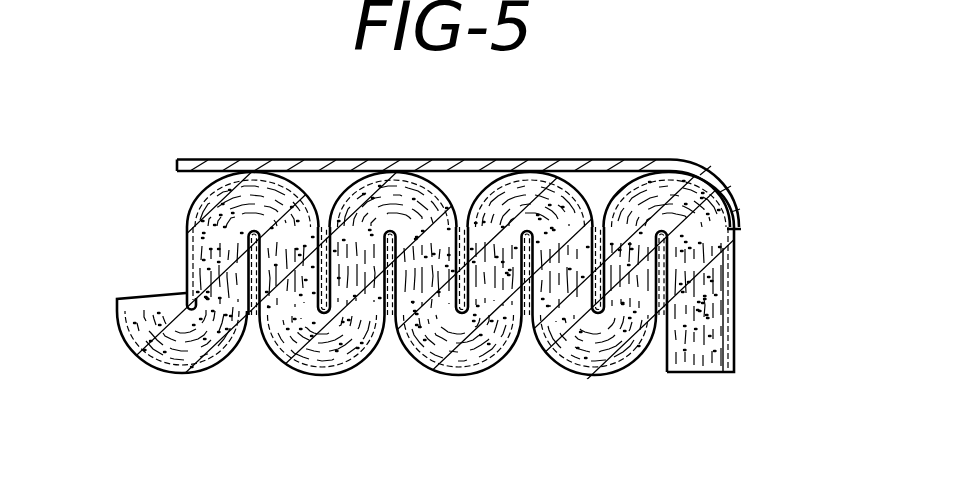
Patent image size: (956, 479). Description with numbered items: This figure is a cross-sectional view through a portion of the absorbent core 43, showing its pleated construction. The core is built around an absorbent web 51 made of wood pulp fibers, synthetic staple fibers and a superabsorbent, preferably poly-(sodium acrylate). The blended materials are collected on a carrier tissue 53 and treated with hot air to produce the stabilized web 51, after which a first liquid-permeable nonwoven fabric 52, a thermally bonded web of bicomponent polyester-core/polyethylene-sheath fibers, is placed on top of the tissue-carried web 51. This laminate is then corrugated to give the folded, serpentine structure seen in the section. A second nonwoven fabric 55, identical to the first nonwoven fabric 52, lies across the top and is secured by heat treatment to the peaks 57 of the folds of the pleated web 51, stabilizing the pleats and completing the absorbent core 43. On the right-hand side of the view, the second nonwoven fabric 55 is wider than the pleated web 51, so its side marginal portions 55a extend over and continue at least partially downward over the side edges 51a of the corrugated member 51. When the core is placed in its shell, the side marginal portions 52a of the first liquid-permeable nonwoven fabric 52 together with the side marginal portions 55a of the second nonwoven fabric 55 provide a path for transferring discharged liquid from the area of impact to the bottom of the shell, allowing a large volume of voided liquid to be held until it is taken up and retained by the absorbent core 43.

The absorbent core 43 is at (795, 266).
The absorbent web 51 is at (186, 312).
The side edges of corrugated member 51a is at (735, 250).
The first liquid-permeable nonwoven fabric 52 is at (185, 238).
The side marginal portions of first liquid-permeable nonwoven fabric 52a is at (736, 321).
The carrier tissue 53 is at (585, 374).
The second nonwoven fabric 55 is at (172, 158).
The side marginal portions of second nonwoven fabric 55a is at (714, 178).
The peaks of the folds 57 is at (237, 158).